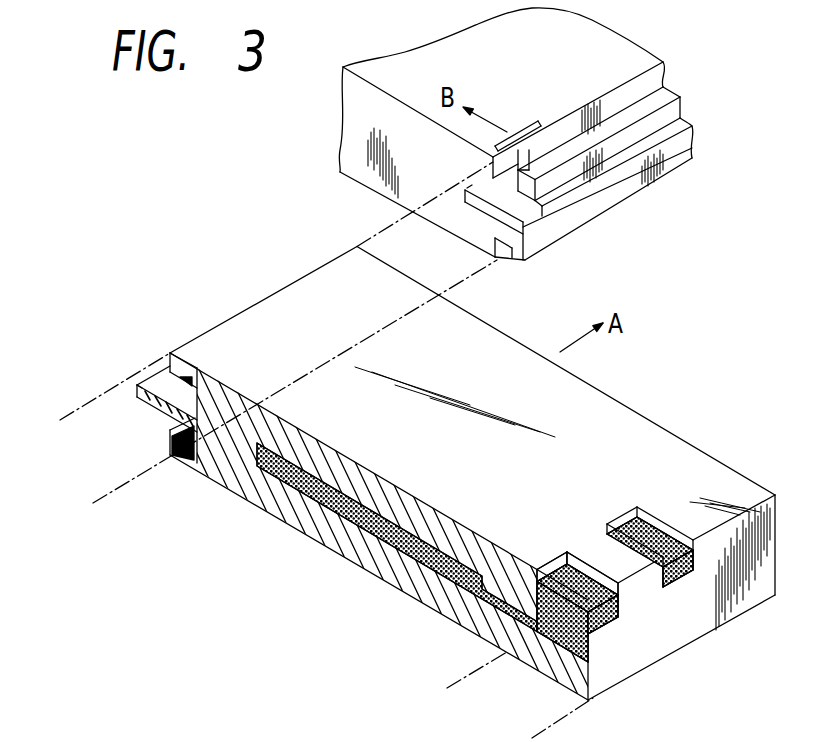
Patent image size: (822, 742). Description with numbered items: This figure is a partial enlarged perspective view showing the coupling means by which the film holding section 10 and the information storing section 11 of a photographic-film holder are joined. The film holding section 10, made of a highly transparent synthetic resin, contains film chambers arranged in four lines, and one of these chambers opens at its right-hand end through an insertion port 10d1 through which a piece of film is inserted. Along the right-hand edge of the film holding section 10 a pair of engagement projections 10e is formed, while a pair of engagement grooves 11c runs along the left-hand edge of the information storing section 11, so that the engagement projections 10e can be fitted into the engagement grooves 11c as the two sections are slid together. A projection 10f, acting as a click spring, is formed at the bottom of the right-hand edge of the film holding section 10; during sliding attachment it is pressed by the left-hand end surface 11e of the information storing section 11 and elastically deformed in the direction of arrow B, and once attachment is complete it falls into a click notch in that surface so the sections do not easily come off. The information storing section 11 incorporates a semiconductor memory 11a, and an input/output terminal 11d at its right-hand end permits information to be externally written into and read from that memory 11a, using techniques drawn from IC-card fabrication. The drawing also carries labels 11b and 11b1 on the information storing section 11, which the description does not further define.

The film holding section 10 is at (398, 58).
The projection (click spring) 10f is at (517, 138).
The engagement projections 10e is at (515, 197).
The insertion port 10d1 is at (615, 172).
The information storing section 11 is at (694, 447).
The semiconductor memory 11a is at (298, 490).
The tab of lower block 11b is at (158, 376).
The end portion of tab 11b1 is at (134, 386).
The engagement grooves 11c is at (198, 369).
The input/output terminal 11d is at (674, 588).
The left-hand end surface 11e is at (240, 308).